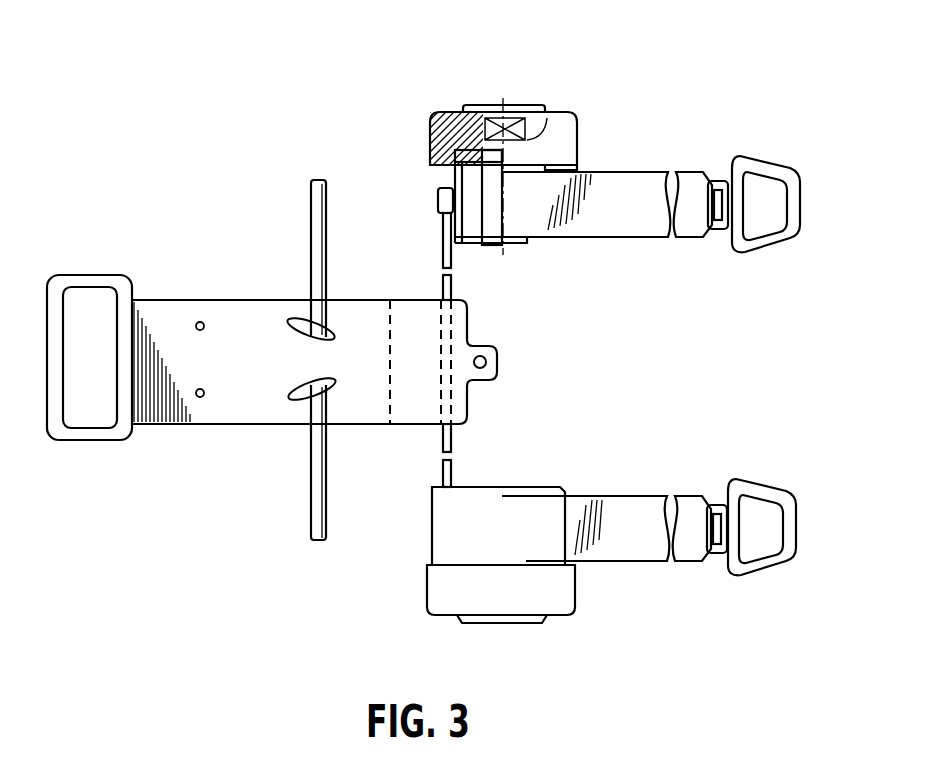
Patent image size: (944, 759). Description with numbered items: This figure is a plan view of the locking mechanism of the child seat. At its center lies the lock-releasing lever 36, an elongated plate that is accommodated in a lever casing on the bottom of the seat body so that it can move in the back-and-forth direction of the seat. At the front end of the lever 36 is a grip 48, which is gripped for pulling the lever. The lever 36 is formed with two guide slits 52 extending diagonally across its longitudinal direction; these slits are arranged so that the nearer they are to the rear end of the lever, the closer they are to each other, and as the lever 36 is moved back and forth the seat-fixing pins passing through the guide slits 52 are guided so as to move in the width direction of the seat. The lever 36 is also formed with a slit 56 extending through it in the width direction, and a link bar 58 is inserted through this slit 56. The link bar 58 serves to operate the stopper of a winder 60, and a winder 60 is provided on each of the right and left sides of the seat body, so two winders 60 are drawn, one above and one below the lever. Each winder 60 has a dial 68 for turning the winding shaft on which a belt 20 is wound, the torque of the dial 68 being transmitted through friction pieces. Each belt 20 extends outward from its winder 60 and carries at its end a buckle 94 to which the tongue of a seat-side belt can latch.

The belt 20 is at (629, 192).
The lock-releasing lever 36 is at (240, 305).
The grip 48 is at (90, 277).
The guide slit 52 is at (292, 335).
The slit 56 is at (390, 349).
The link bar 58 is at (327, 193).
The winder 60 is at (566, 330).
The dial 68 is at (443, 115).
The buckle 94 is at (766, 220).